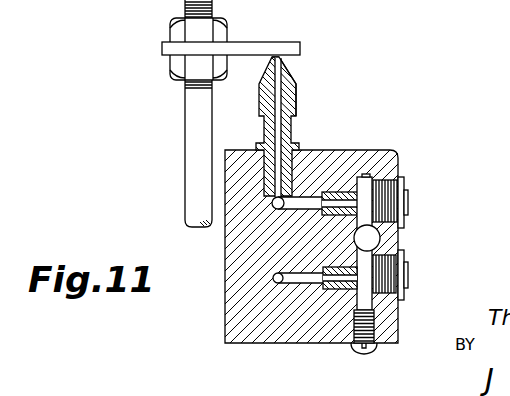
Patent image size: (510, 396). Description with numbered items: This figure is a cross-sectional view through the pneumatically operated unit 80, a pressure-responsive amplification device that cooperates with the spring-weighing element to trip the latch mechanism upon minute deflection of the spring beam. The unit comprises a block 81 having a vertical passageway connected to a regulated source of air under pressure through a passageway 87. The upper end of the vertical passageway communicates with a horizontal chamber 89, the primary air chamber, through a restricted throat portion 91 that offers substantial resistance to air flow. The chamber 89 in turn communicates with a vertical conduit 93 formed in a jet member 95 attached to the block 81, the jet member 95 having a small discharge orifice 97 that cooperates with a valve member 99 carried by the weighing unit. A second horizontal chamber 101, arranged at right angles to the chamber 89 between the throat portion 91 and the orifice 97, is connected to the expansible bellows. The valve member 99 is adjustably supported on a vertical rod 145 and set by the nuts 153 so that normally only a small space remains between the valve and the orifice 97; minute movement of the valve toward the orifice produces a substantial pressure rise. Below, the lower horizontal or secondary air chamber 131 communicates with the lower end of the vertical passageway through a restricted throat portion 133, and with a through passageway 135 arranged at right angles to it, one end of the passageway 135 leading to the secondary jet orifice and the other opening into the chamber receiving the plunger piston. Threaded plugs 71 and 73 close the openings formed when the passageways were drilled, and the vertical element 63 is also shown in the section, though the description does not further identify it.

The valve stem 63 is at (365, 277).
The threaded plug 71 is at (405, 183).
The threaded plug 73 is at (372, 347).
The pneumatically operated unit 80 is at (406, 108).
The block 81 is at (393, 150).
The passageway 87 is at (372, 242).
The horizontal chamber 89 is at (303, 195).
The restricted throat portion 91 is at (328, 188).
The vertical conduit 93 is at (276, 108).
The jet member 95 is at (296, 85).
The discharge orifice 97 is at (287, 61).
The valve member 99 is at (272, 49).
The second horizontal chamber 101 is at (273, 202).
The secondary air chamber 131 is at (300, 284).
The restricted throat portion 133 is at (328, 290).
The through passageway 135 is at (273, 283).
The vertical rod 145 is at (188, 118).
The nuts 153 is at (170, 64).